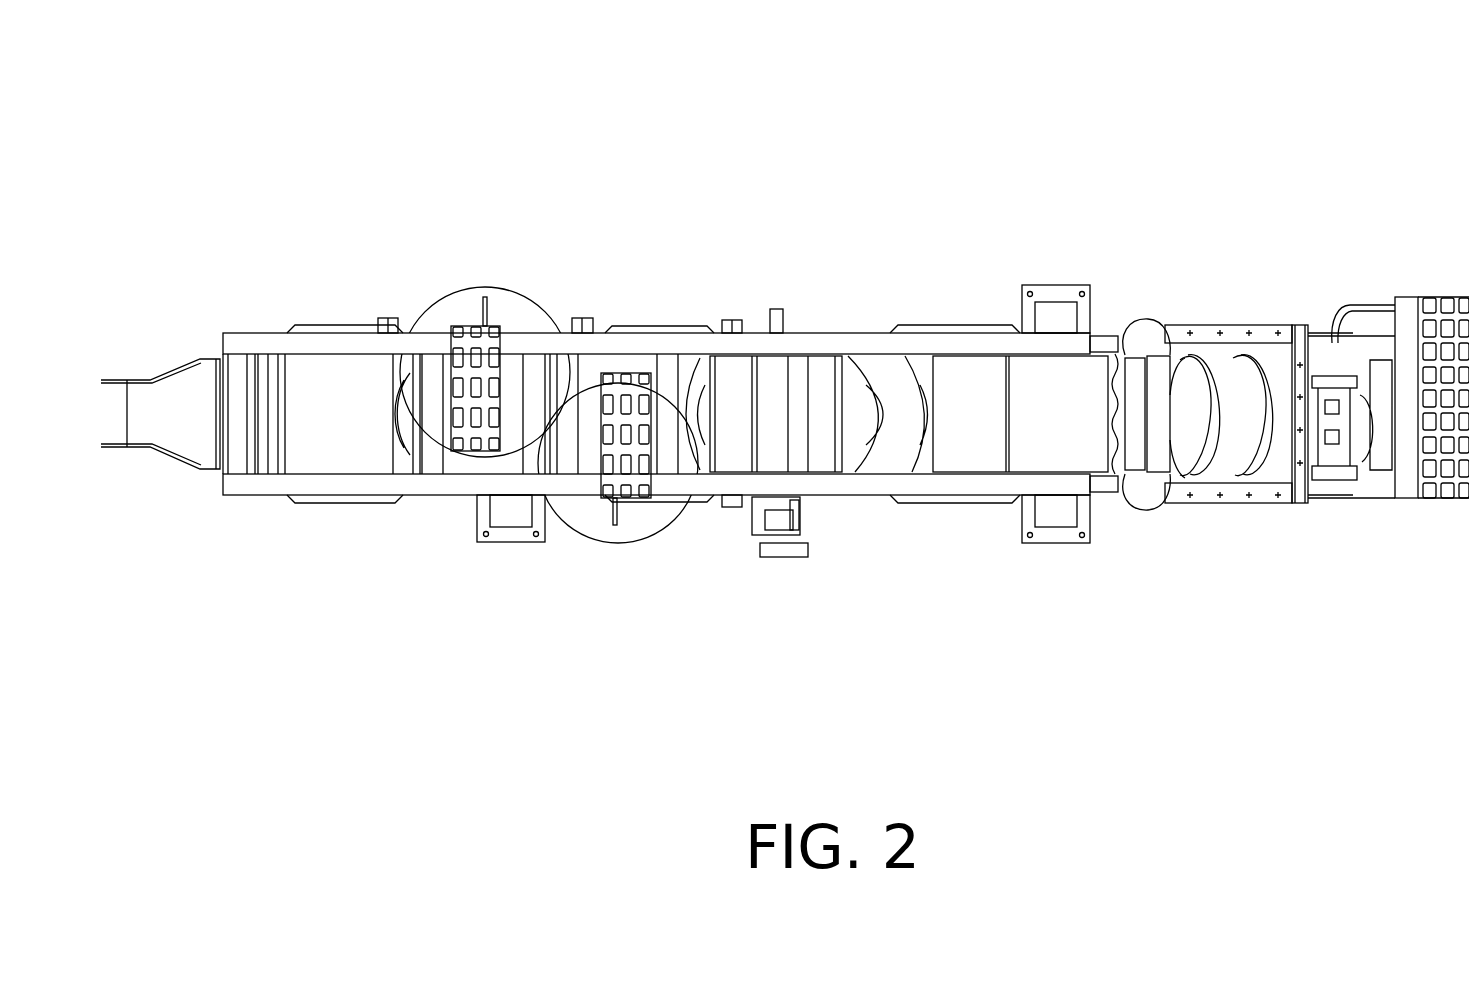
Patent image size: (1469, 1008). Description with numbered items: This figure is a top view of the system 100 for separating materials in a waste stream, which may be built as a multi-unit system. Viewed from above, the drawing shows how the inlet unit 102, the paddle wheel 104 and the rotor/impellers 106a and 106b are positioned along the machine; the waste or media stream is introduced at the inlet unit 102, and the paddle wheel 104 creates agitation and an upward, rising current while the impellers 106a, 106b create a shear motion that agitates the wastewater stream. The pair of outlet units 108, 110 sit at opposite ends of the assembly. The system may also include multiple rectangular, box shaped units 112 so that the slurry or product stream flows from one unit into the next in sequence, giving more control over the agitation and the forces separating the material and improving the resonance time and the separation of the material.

The system 100 is at (1140, 127).
The inlet unit 102 is at (1000, 500).
The paddle wheel 104 is at (803, 392).
The impeller 106a is at (613, 542).
The impeller 106b is at (462, 290).
The outlet unit 108 is at (163, 385).
The outlet unit 110 is at (1437, 470).
The rectangular/box shaped unit 112 is at (1207, 402).